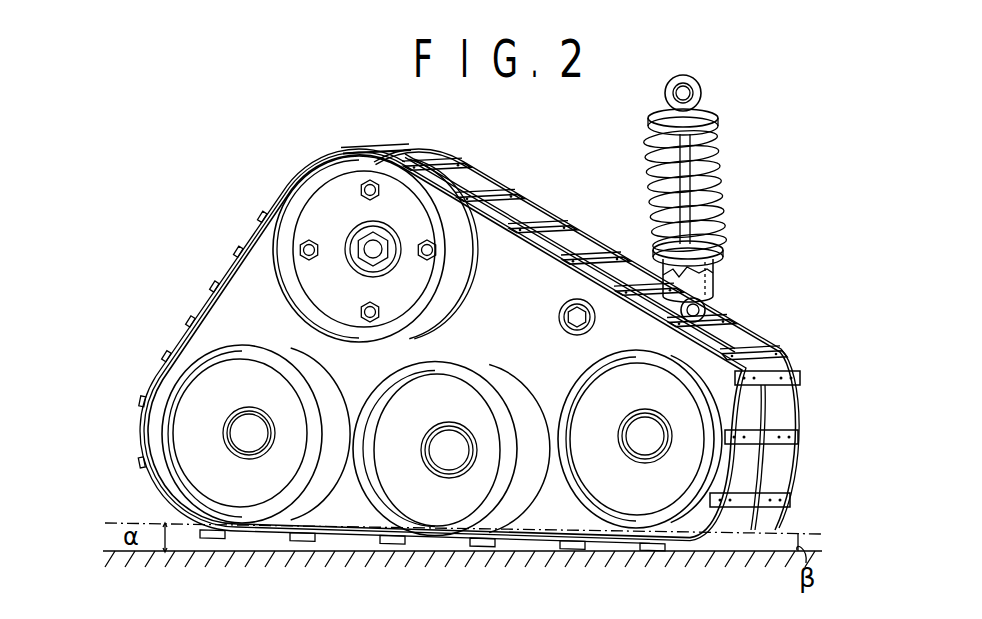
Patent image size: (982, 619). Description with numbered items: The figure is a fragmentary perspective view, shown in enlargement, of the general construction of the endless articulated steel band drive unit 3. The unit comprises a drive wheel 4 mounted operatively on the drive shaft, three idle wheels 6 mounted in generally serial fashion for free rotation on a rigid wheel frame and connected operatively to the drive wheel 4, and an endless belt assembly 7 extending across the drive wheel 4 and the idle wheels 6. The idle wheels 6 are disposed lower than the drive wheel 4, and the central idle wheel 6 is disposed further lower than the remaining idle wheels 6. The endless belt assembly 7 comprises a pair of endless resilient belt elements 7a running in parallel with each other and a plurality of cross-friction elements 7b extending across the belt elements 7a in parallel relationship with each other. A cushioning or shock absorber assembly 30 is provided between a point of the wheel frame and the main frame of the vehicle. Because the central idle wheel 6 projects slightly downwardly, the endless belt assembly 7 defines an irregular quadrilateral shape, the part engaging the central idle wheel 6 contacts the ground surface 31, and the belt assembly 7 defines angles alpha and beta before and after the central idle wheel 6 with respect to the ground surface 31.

The endless articulated steel band drive unit 3 is at (484, 346).
The drive wheel 4 is at (297, 212).
The idle wheels 6 is at (155, 405).
The endless belt assembly 7 is at (549, 212).
The endless resilient belt elements 7a is at (740, 356).
The cross-friction elements 7b is at (778, 378).
The shock absorber assembly 30 is at (716, 110).
The ground surface 31 is at (719, 551).